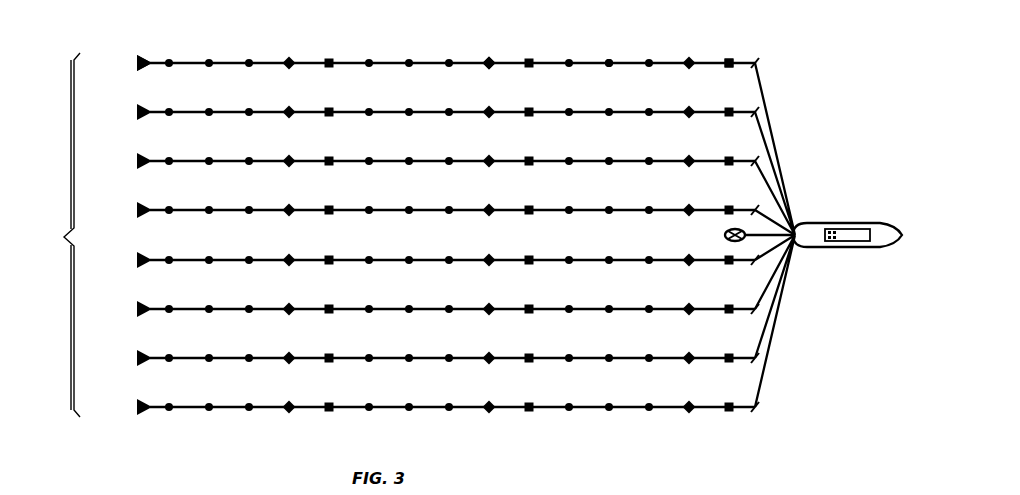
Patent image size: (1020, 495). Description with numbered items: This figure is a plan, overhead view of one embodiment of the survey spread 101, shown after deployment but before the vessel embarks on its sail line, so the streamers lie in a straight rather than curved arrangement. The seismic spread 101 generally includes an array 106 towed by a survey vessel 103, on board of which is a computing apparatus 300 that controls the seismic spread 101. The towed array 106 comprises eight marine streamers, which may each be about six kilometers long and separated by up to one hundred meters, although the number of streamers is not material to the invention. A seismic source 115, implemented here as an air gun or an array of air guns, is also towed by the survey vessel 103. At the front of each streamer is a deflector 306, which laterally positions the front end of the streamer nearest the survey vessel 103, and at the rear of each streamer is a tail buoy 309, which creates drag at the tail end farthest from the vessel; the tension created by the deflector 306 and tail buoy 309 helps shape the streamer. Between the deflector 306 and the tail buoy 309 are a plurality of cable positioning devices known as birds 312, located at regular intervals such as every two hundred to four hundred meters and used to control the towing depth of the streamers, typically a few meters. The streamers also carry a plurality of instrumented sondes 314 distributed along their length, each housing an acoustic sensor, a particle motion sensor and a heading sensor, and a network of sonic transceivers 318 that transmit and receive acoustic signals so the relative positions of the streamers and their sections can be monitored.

The survey spread 101 is at (803, 29).
The survey vessel 103 is at (843, 223).
The array 106 is at (391, 235).
The seismic source 115 is at (723, 235).
The computing apparatus 300 is at (838, 241).
The deflector 306 is at (757, 66).
The tail buoy 309 is at (147, 57).
The birds 312 is at (724, 58).
The instrumented sondes 314 is at (606, 59).
The sonic transceivers 318 is at (489, 58).